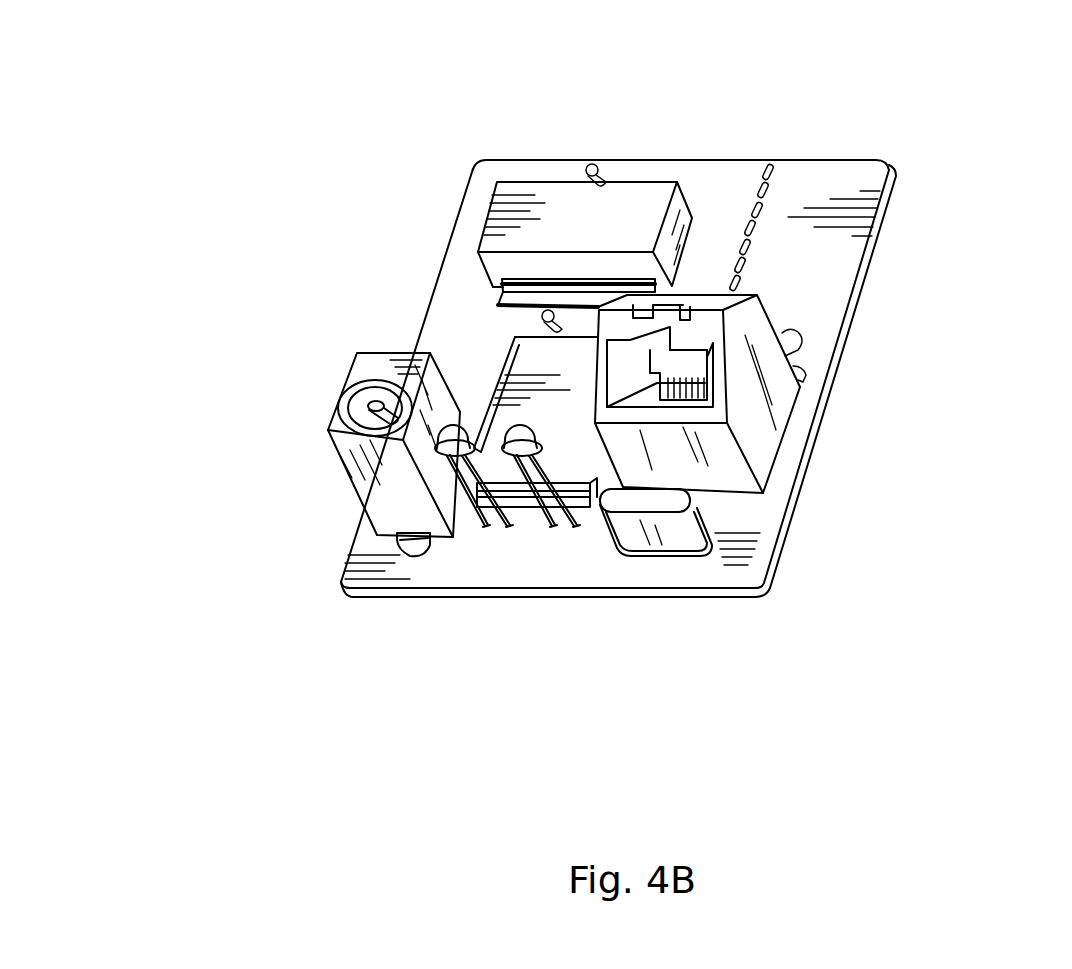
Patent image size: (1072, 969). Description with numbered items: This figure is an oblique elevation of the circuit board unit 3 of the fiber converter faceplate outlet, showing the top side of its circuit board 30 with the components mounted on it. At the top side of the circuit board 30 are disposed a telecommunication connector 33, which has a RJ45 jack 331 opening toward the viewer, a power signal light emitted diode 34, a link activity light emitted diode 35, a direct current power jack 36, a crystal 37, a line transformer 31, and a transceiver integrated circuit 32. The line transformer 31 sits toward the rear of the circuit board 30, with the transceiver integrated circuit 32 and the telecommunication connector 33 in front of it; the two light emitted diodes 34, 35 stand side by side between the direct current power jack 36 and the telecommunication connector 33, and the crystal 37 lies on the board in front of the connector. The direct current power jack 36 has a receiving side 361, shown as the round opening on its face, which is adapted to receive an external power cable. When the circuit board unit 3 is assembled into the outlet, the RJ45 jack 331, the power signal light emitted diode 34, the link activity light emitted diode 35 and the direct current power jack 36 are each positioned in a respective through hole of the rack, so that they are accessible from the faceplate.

The circuit board unit 3 is at (880, 323).
The circuit board 30 is at (875, 246).
The line transformer 31 is at (625, 195).
The transceiver integrated circuit 32 is at (525, 360).
The telecommunication connector 33 is at (764, 394).
The RJ45 jack 331 is at (627, 370).
The power signal light emitted diode 34 is at (442, 445).
The link activity light emitted diode 35 is at (520, 447).
The direct current power jack 36 is at (309, 454).
The receiving side 361 is at (345, 426).
The crystal 37 is at (703, 520).